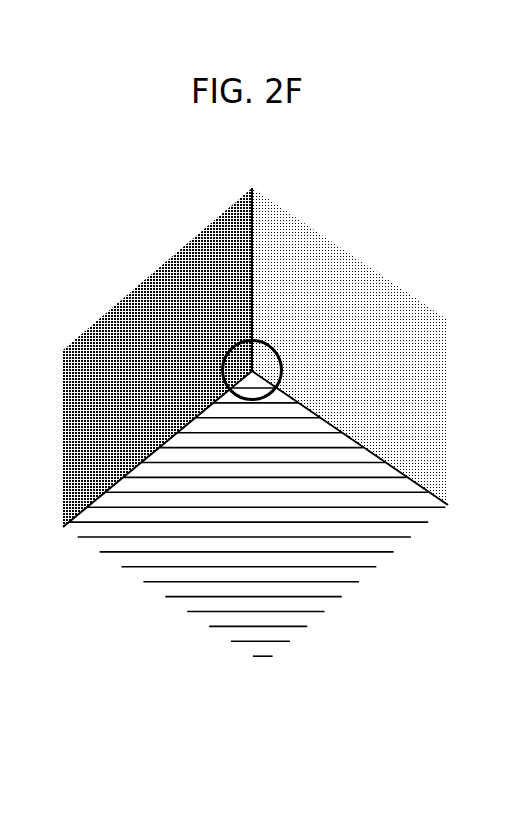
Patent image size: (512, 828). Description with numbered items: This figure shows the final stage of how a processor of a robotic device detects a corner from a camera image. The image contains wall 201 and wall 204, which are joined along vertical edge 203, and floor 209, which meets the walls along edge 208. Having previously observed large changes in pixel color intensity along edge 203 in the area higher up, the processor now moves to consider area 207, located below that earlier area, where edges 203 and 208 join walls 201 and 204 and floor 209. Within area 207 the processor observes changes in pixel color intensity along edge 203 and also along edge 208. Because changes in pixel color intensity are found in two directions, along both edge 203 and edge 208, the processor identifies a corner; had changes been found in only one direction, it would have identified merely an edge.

The wall 201 is at (157, 357).
The edge 203 is at (253, 247).
The wall 204 is at (350, 346).
The area 207 is at (283, 367).
The edge 208 is at (83, 511).
The floor 209 is at (305, 623).